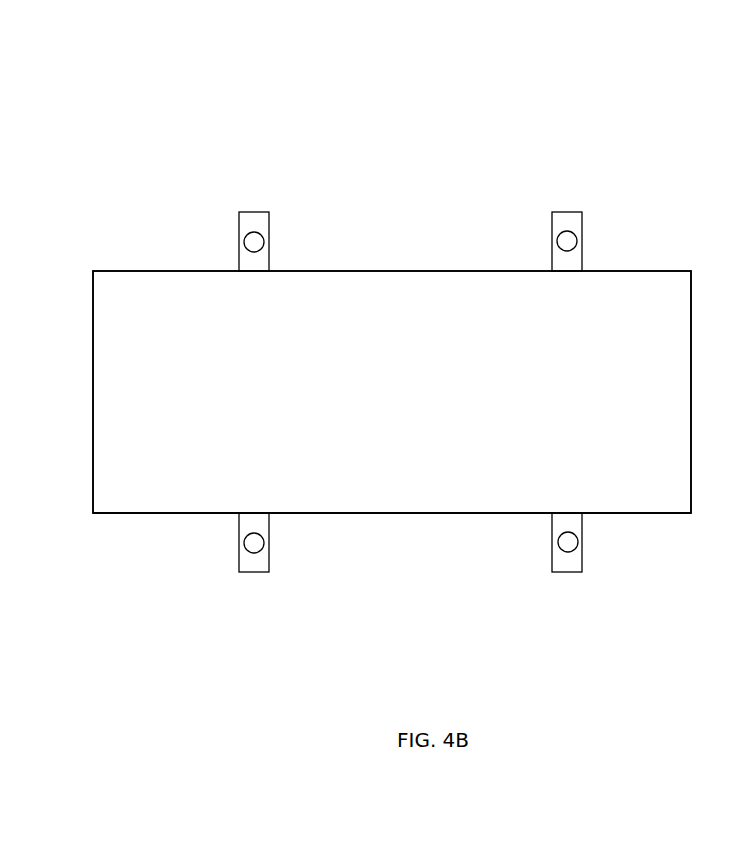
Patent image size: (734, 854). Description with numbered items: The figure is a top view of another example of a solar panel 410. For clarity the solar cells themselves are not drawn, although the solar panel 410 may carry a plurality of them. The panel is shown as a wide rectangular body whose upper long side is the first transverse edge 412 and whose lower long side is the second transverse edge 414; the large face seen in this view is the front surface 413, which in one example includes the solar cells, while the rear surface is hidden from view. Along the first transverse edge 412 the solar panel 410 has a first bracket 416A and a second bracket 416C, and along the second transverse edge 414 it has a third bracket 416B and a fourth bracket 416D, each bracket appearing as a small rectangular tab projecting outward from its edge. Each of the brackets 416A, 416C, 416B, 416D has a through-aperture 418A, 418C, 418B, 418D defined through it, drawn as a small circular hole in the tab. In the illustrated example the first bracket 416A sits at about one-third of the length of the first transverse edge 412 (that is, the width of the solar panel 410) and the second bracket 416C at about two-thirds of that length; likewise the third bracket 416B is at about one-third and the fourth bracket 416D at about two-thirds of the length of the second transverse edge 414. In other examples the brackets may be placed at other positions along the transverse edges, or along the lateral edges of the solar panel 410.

The solar panel 410 is at (146, 209).
The first transverse edge 412 is at (385, 272).
The front surface 413 is at (598, 485).
The second transverse edge 414 is at (387, 513).
The first bracket 416A is at (571, 226).
The third bracket 416B is at (567, 558).
The second bracket 416C is at (254, 226).
The fourth bracket 416D is at (253, 562).
The through-aperture 418A is at (565, 241).
The through-aperture 418B is at (568, 541).
The through-aperture 418C is at (250, 240).
The through-aperture 418D is at (250, 543).